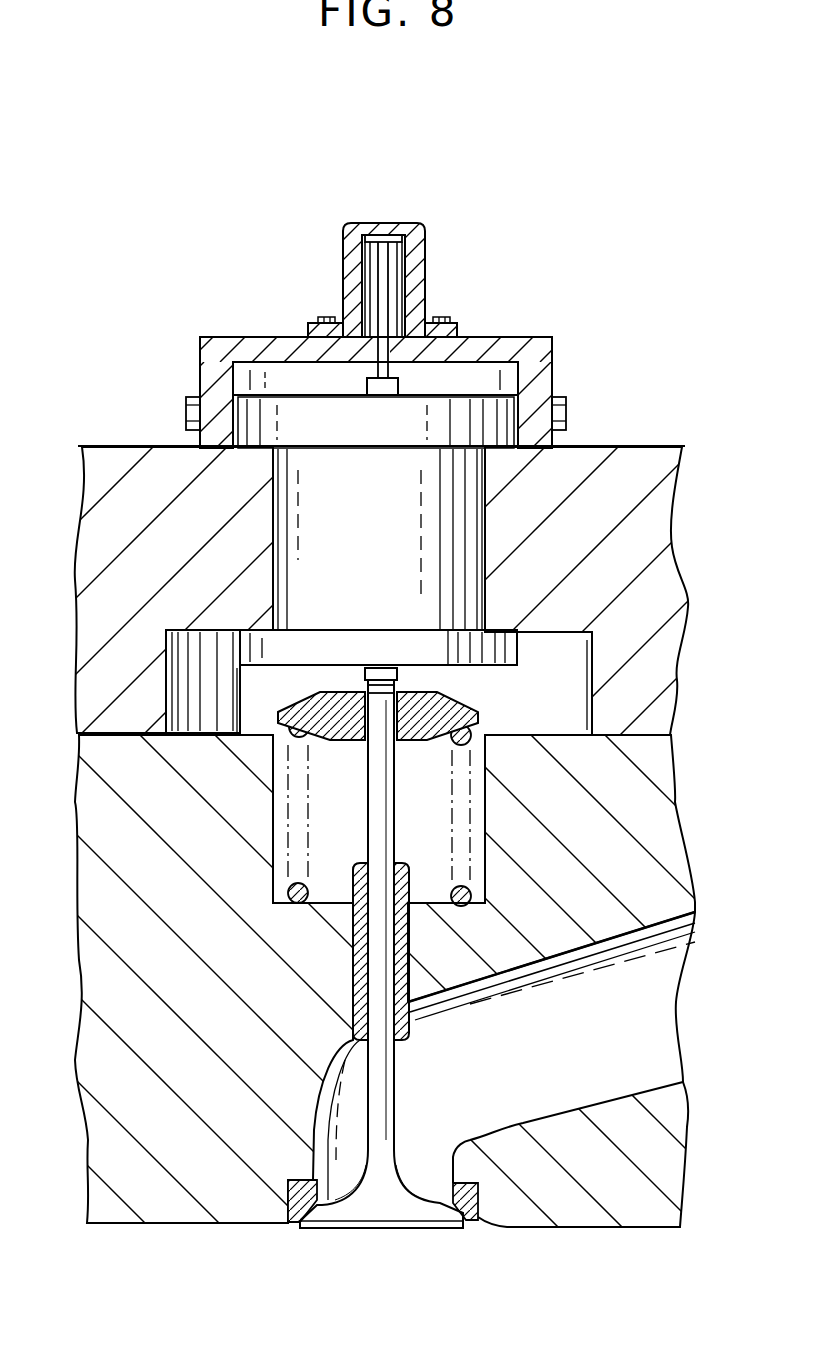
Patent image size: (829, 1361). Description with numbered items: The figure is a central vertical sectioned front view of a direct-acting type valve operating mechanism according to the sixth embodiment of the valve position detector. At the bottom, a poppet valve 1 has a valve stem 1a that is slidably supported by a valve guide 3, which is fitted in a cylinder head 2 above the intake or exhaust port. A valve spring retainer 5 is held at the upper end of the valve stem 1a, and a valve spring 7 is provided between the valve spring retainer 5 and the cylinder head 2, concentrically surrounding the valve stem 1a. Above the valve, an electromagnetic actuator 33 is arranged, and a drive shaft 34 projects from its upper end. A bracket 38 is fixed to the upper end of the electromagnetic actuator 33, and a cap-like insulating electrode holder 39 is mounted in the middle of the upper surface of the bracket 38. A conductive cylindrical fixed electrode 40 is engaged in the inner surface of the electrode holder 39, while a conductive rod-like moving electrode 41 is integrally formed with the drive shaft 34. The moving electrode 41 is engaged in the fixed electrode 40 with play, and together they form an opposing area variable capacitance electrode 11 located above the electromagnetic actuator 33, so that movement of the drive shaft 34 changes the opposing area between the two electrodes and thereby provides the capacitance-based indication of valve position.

The poppet valve 1 is at (392, 954).
The valve stem 1a is at (398, 1107).
The cylinder head 2 is at (183, 1218).
The valve guide 3 is at (353, 973).
The valve spring retainer 5 is at (310, 695).
The valve spring 7 is at (288, 890).
The opposing area variable capacitance electrode 11 is at (382, 224).
The electromagnetic actuator 33 is at (486, 512).
The drive shaft 34 is at (398, 387).
The bracket 38 is at (552, 353).
The insulating electrode holder 39 is at (425, 277).
The fixed electrode 40 is at (407, 290).
The moving electrode 41 is at (412, 263).